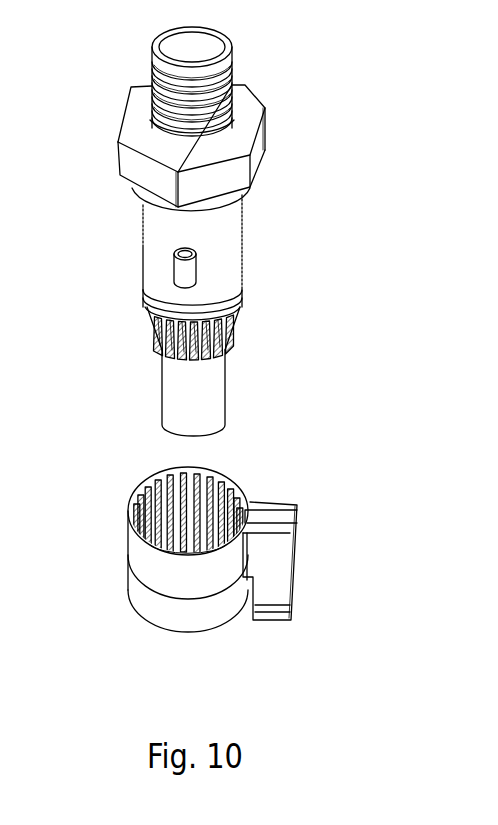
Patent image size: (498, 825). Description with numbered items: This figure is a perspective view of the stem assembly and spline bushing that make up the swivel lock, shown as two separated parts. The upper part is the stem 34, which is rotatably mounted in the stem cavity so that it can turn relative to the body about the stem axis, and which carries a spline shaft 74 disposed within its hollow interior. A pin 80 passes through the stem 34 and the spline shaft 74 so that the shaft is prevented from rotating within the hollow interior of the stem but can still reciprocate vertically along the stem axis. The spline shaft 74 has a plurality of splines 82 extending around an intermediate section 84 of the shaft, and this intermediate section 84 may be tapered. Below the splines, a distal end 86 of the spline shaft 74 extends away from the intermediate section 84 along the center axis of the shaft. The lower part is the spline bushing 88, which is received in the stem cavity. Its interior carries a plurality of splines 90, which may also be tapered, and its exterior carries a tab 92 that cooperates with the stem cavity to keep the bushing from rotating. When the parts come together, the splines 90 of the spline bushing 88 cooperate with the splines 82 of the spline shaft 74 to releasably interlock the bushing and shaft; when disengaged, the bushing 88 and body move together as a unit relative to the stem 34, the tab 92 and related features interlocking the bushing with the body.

The stem 34 is at (152, 53).
The spline shaft 74 is at (222, 229).
The pin 80 is at (172, 253).
The splines 82 is at (150, 325).
The intermediate section 84 is at (240, 320).
The distal end 86 is at (225, 420).
The spline bushing 88 is at (128, 540).
The splines 90 is at (148, 497).
The tab 92 is at (290, 588).